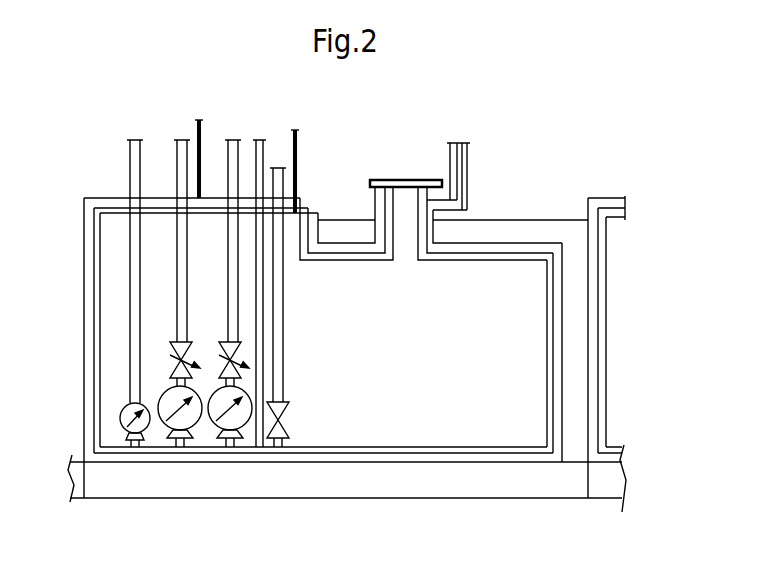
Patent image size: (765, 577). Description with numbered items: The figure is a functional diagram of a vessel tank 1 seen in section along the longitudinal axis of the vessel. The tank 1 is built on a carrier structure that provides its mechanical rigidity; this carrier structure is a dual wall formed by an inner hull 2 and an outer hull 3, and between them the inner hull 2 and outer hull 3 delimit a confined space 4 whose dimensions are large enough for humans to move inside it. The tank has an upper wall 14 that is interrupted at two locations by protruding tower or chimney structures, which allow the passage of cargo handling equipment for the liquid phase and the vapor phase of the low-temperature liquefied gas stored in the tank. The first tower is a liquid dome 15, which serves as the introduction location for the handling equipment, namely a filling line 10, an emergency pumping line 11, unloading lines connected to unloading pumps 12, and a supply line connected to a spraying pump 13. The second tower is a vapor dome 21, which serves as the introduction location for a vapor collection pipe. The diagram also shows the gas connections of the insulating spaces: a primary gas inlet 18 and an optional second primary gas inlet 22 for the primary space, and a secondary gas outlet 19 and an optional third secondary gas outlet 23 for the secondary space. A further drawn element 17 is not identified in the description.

The tank 1 is at (531, 182).
The inner hull 2 is at (573, 465).
The outer hull 3 is at (408, 498).
The confined space 4 is at (483, 483).
The filling line 10 is at (261, 450).
The emergency pumping line 11 is at (298, 450).
The unloading pumps 12 is at (186, 450).
The spraying pump 13 is at (139, 450).
The upper wall 14 is at (340, 242).
The liquid dome 15 is at (160, 192).
The liquid level 17 is at (482, 234).
The primary gas inlet 18 is at (297, 143).
The secondary gas outlet 19 is at (202, 147).
The vapor dome 21 is at (387, 170).
The second primary gas inlet 22 is at (470, 147).
The third secondary gas outlet 23 is at (446, 143).